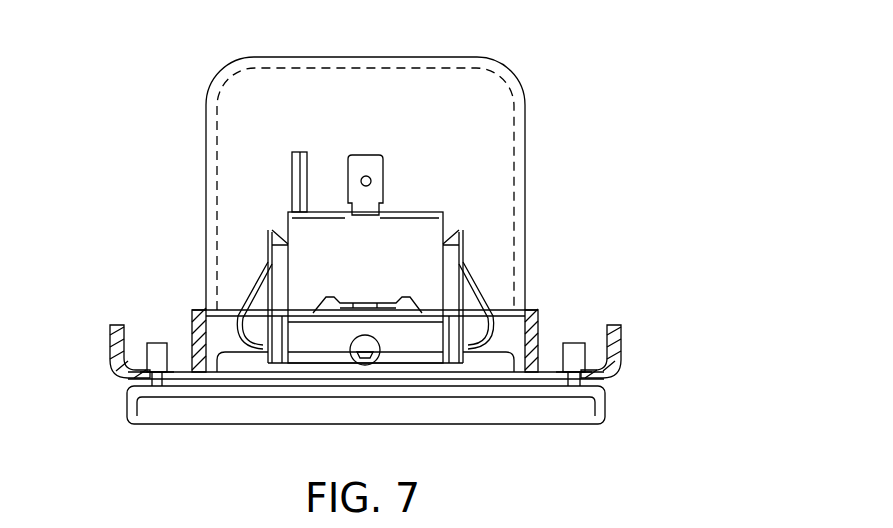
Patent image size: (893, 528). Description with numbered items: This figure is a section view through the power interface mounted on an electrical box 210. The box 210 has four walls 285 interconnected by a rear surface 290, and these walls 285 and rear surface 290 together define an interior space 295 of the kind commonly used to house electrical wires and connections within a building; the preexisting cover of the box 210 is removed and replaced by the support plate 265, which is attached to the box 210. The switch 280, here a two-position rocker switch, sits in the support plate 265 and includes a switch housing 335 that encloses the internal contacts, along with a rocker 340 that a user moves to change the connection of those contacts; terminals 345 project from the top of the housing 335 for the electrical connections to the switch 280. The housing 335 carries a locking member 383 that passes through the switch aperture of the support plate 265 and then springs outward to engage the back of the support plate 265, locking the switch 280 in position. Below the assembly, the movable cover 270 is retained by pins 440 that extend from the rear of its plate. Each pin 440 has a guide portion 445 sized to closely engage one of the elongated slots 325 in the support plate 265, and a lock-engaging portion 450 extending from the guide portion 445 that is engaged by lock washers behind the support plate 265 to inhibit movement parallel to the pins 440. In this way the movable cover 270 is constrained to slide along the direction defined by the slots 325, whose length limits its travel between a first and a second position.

The box 210 is at (531, 48).
The walls 285 is at (526, 152).
The rear surface 290 is at (405, 56).
The space 295 is at (244, 190).
The switch 280 is at (429, 176).
The switch housing 335 is at (433, 227).
The terminals 345 is at (350, 176).
The locking member 383 is at (250, 290).
The rocker 340 is at (438, 382).
The pins 440 is at (155, 343).
The lock-engaging portion 450 is at (121, 356).
The support plate 265 is at (621, 350).
The movable cover 270 is at (619, 440).
The elongated slots 325 is at (163, 376).
The guide portion 445 is at (148, 376).